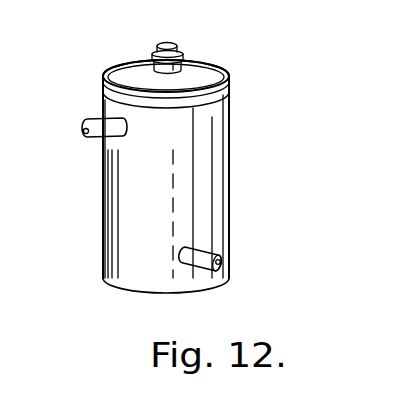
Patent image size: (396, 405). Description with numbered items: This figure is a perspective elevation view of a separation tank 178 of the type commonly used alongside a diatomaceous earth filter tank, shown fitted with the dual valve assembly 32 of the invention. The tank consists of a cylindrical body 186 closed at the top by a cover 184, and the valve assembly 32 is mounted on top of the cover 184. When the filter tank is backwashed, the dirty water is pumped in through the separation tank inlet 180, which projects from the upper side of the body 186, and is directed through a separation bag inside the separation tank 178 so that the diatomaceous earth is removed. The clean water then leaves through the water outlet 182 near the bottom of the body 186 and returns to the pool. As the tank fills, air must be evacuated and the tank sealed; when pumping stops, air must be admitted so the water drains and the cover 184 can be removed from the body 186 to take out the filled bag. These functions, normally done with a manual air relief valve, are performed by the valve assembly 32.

The dual valve assembly 32 is at (180, 42).
The separation tank 178 is at (240, 190).
The separation tank inlet 180 is at (87, 136).
The water outlet 182 is at (222, 257).
The cover 184 is at (224, 82).
The body 186 is at (112, 253).